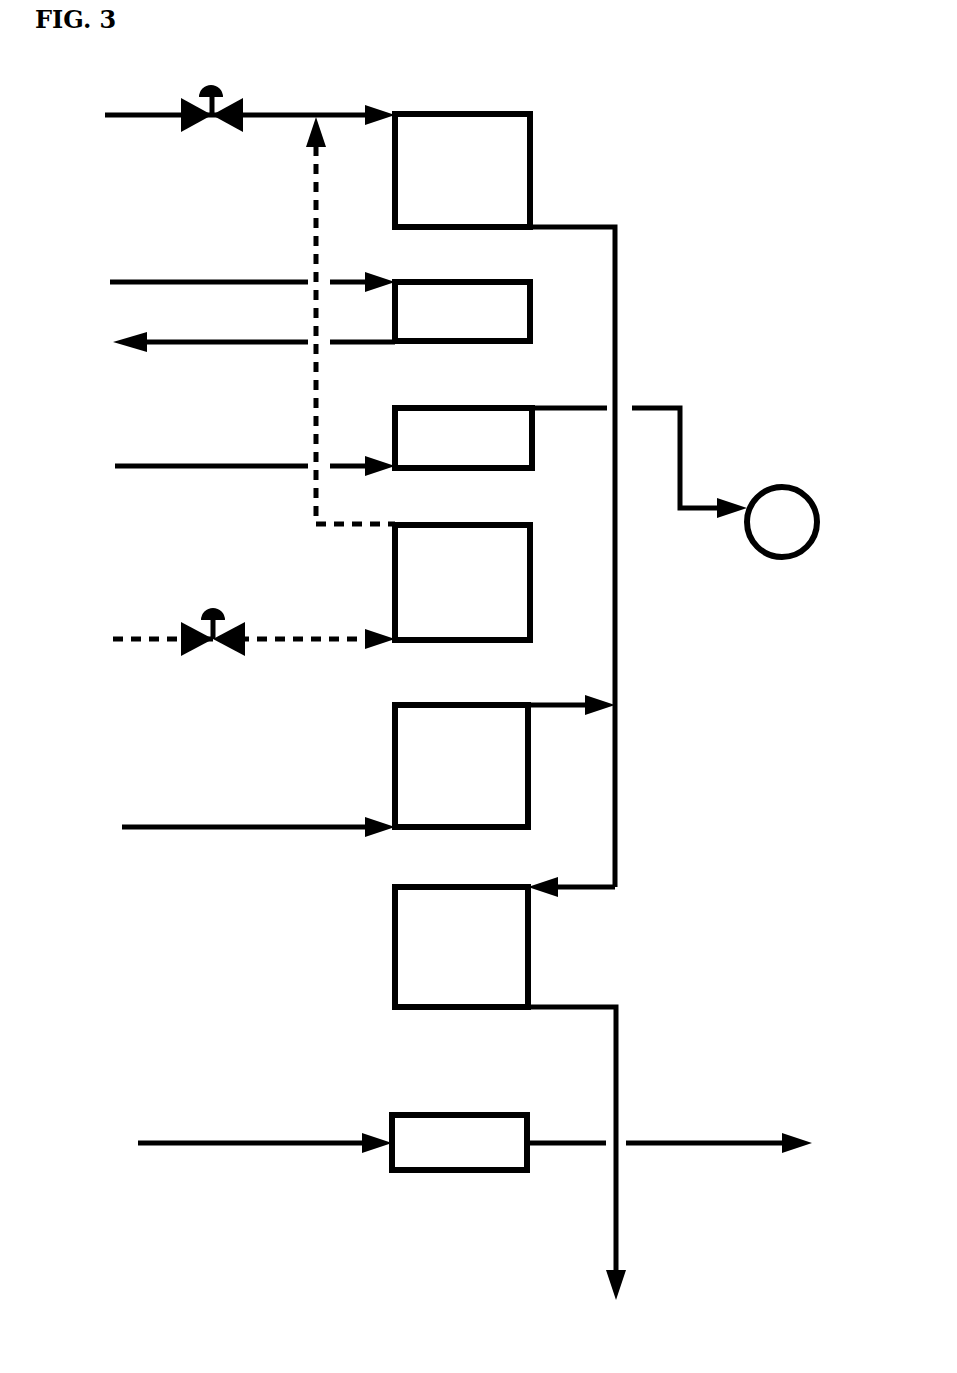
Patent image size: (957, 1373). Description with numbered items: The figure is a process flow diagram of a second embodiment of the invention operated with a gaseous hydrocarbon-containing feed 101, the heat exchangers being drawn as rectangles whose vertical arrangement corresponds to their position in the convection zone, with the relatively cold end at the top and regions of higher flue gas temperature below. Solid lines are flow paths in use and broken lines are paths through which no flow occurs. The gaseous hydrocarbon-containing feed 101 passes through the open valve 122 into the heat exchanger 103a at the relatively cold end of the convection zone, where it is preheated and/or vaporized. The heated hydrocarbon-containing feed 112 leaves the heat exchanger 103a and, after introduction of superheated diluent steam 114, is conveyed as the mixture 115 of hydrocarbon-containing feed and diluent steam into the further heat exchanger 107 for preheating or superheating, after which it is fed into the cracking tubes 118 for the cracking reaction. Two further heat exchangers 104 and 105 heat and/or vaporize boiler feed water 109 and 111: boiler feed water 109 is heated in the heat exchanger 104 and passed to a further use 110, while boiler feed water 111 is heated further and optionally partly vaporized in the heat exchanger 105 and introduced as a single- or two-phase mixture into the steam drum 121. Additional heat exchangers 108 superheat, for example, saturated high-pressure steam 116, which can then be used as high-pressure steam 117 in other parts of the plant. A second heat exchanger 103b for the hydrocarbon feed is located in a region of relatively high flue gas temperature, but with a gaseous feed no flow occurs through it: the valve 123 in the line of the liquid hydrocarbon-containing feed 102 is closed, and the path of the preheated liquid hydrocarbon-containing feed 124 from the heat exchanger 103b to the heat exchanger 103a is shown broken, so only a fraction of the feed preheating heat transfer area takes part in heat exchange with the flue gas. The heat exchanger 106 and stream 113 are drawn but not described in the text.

The gaseous hydrocarbon-containing feed 101 is at (223, 115).
The liquid hydrocarbon-containing feed 102 is at (229, 639).
The heat exchanger 103a is at (462, 170).
The heat exchanger 103b is at (462, 582).
The heat exchanger 104 is at (462, 311).
The heat exchanger 105 is at (463, 438).
The third processing unit 106 is at (461, 766).
The heat exchanger 107 is at (461, 947).
The additional heat exchangers 108 is at (459, 1142).
The boiler feed water 109 is at (226, 282).
The further use 110 is at (226, 342).
The boiler feed water 111 is at (228, 466).
The heated hydrocarbon-containing feed 112 is at (572, 557).
The inlet stream 113 is at (232, 827).
The diluent steam 114 is at (571, 697).
The mixture of hydrocarbon-containing feed and diluent steam 115 is at (571, 878).
The saturated high-pressure steam 116 is at (239, 1143).
The high-pressure steam 117 is at (693, 1143).
The cracking tubes 118 is at (584, 1172).
The steam drum 121 is at (673, 482).
The valve 122 is at (212, 122).
The valve 123 is at (213, 646).
The preheated liquid hydrocarbon-containing feed 124 is at (350, 320).